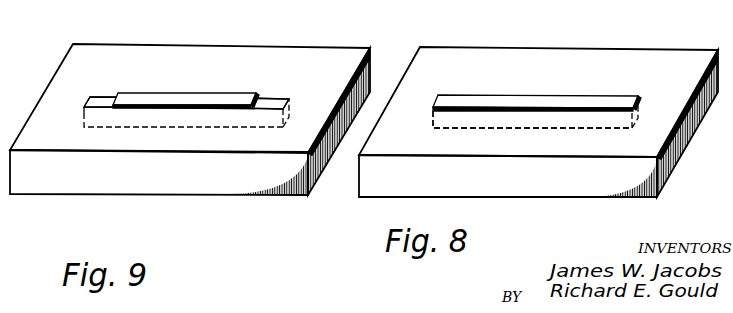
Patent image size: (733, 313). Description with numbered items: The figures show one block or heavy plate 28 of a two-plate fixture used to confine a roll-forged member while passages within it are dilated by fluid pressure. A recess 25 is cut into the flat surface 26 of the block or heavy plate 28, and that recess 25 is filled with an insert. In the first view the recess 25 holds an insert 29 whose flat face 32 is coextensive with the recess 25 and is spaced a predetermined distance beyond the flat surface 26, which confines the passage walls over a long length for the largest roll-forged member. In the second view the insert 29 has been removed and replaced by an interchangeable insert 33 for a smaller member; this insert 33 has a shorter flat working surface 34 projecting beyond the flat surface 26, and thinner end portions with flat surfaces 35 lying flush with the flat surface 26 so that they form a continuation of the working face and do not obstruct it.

In FIG. 9, the recess 25 is at (203, 130).
In FIG. 8, the recess 25 is at (547, 132).
In FIG. 9, the flat surface 26 is at (242, 58).
In FIG. 8, the flat surface 26 is at (582, 63).
In FIG. 9, the block or heavy plate 28 is at (290, 197).
In FIG. 8, the block or heavy plate 28 is at (643, 198).
In FIG. 8, the insert 29 is at (483, 112).
In FIG. 8, the flat face 32 is at (483, 100).
In FIG. 9, the interchangeable insert 33 is at (122, 110).
In FIG. 9, the flat working surface 34 is at (163, 96).
In FIG. 9, the flat surfaces 35 is at (98, 105).